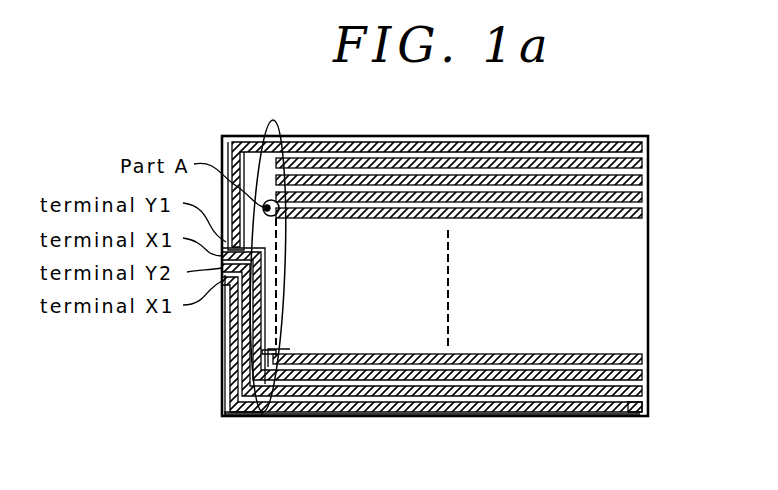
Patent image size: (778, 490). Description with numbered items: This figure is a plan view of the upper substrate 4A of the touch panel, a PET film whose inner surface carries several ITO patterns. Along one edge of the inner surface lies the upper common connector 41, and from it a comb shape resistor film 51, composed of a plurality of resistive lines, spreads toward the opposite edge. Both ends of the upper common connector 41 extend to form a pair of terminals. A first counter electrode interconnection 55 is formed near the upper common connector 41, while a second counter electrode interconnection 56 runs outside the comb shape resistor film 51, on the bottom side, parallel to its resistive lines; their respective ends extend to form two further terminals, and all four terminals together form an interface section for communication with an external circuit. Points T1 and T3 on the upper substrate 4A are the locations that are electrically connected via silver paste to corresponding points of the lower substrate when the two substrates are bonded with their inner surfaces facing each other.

The upper substrate 4A is at (650, 258).
The comb shape resistor film 51 is at (488, 135).
The second counter electrode interconnection 56 is at (453, 417).
The first counter electrode interconnection 55 is at (262, 352).
The upper common connector 41 is at (281, 126).
The point T1 is at (263, 418).
The point T3 is at (630, 415).